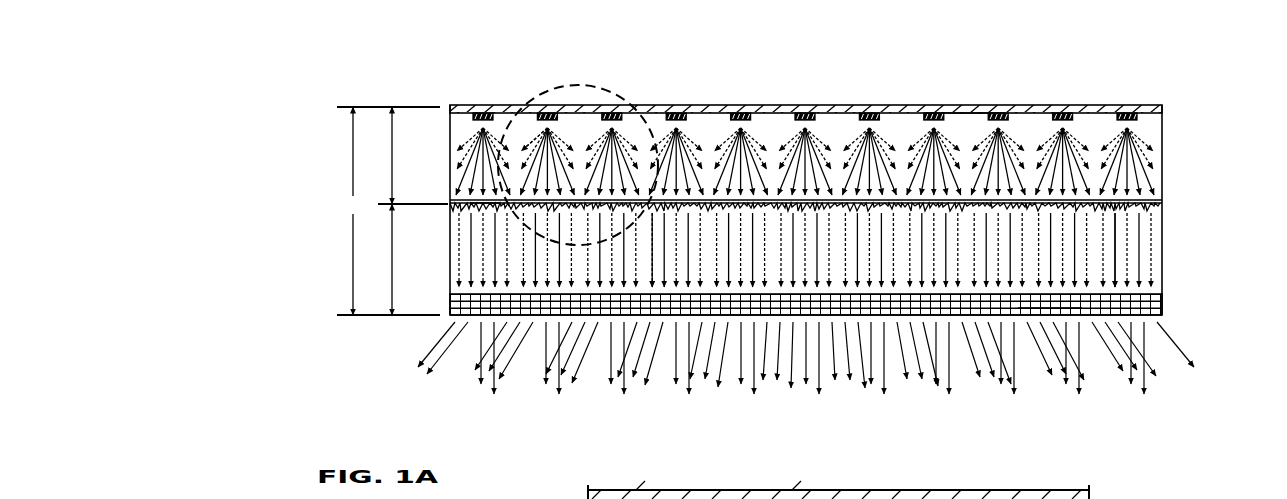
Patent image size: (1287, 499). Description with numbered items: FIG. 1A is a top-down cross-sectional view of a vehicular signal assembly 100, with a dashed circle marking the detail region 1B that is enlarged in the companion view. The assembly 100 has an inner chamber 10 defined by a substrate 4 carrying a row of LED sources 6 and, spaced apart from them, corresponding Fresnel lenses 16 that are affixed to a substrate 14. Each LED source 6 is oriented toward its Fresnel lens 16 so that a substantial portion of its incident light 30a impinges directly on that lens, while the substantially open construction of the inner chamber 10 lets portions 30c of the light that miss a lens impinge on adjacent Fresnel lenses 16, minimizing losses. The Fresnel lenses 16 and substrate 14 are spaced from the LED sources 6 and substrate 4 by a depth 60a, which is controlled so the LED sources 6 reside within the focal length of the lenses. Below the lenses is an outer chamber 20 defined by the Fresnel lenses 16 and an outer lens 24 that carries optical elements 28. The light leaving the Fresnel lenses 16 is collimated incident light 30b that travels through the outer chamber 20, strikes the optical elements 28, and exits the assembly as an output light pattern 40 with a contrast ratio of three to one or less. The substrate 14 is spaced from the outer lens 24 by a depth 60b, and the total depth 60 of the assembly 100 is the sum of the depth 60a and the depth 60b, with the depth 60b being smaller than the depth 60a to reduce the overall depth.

In FIG. 1A, the vehicular signal assembly 100 is at (1157, 57).
In FIG. 1A, the substrate 4 is at (1150, 106).
In FIG. 1B, the substrate 4 is at (1072, 490).
In FIG. 1A, the LED source 6 is at (985, 113).
In FIG. 1B, the LED source 6 is at (737, 490).
In FIG. 1A, the inner chamber 10 is at (1107, 138).
In FIG. 1A, the substrate 14 is at (1163, 205).
In FIG. 1A, the Fresnel lens 16 is at (482, 208).
In FIG. 1A, the outer chamber 20 is at (1130, 266).
In FIG. 1A, the outer lens 24 is at (1163, 322).
In FIG. 1A, the optical elements 28 is at (1023, 307).
In FIG. 1A, the incident light 30a is at (560, 148).
In FIG. 1B, the incident light 30a is at (792, 490).
In FIG. 1A, the incident light 30b is at (653, 258).
In FIG. 1A, the portions of incident light 30c is at (530, 142).
In FIG. 1B, the portions of incident light 30c is at (636, 490).
In FIG. 1A, the output light pattern 40 is at (1188, 346).
In FIG. 1A, the total depth 60 is at (388, 211).
In FIG. 1A, the depth 60a is at (392, 152).
In FIG. 1A, the depth 60b is at (392, 268).
In FIG. 1A, the detail region of FIG. 1B is at (617, 95).